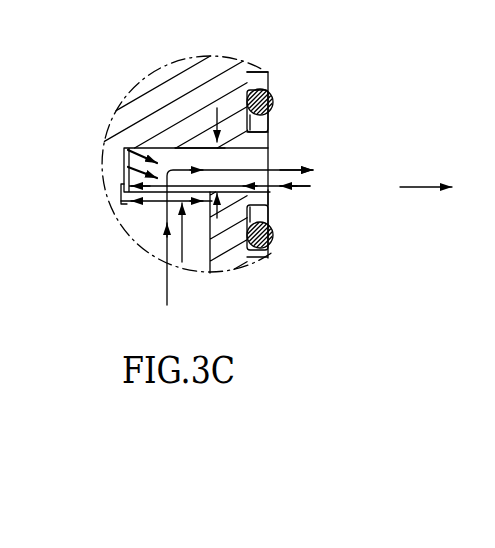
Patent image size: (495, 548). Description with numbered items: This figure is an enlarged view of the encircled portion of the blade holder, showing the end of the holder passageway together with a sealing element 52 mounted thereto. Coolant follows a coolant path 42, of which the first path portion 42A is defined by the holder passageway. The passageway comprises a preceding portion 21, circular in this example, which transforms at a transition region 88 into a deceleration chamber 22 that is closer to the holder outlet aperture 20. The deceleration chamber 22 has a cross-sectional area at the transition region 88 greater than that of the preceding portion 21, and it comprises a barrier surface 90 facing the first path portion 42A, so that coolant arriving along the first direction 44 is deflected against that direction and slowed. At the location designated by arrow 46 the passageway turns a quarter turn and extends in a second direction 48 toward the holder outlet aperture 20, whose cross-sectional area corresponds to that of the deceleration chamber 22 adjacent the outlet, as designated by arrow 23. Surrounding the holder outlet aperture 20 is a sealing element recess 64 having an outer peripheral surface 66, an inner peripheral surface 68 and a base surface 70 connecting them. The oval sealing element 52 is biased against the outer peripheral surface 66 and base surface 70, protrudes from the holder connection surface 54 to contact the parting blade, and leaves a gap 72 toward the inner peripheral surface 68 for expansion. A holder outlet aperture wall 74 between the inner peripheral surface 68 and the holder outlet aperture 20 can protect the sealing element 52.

The holder outlet aperture 20 is at (299, 147).
The preceding portion 21 is at (128, 218).
The deceleration chamber 22 is at (168, 138).
The location adjacent the holder outlet aperture 23 is at (196, 138).
The coolant path 42 is at (223, 251).
The first path portion 42A is at (240, 237).
The first direction 44 is at (198, 232).
The turn location 46 is at (123, 152).
The second direction 48 is at (414, 189).
The sealing element 52 is at (272, 246).
The holder connection surface 54 is at (272, 84).
The sealing element recess 64 is at (270, 107).
The outer peripheral surface 66 is at (270, 81).
The inner peripheral surface 68 is at (200, 147).
The base surface 70 is at (247, 138).
The gap 72 is at (271, 225).
The holder outlet aperture wall 74 is at (270, 197).
The transition region 88 is at (123, 163).
The barrier surface 90 is at (140, 97).